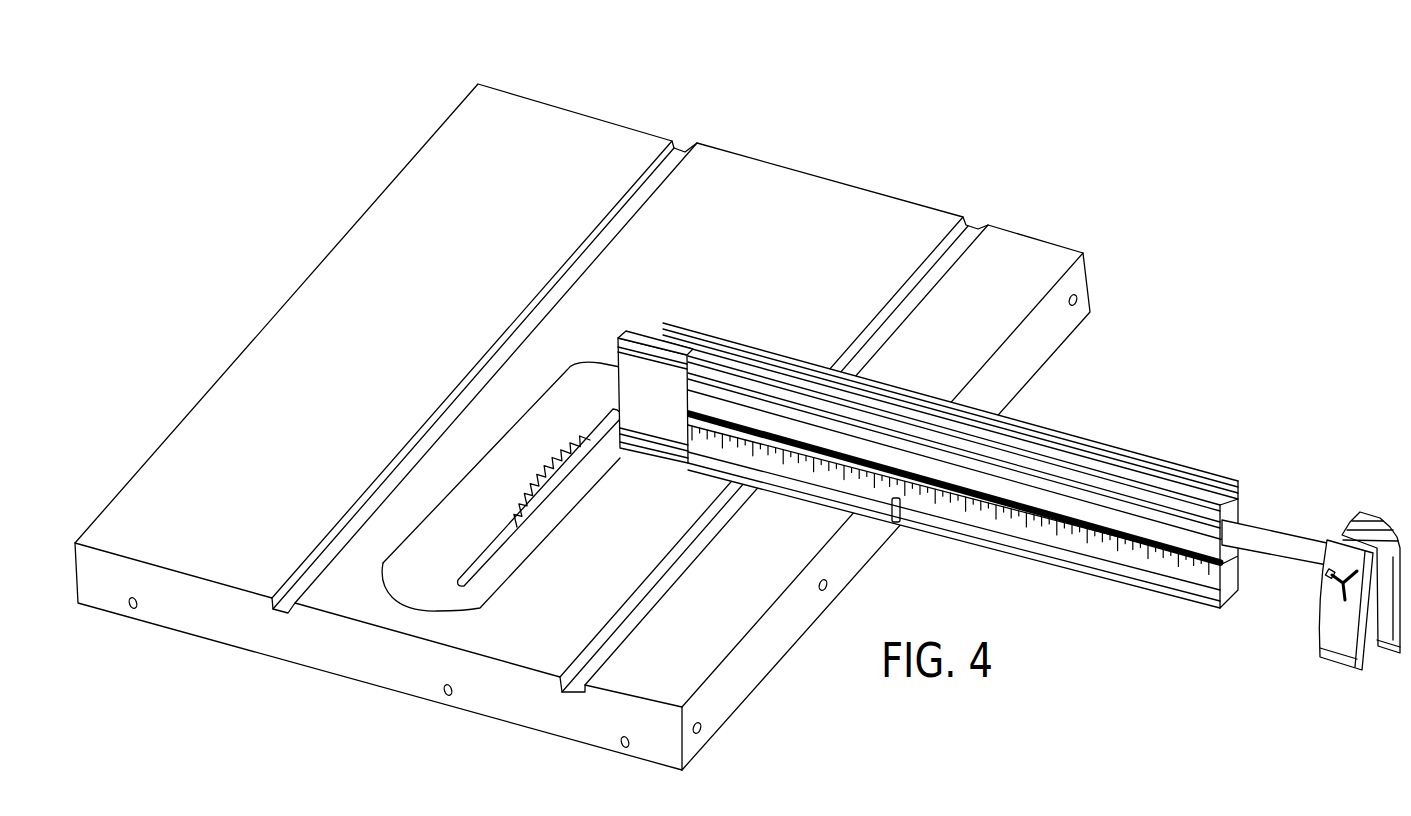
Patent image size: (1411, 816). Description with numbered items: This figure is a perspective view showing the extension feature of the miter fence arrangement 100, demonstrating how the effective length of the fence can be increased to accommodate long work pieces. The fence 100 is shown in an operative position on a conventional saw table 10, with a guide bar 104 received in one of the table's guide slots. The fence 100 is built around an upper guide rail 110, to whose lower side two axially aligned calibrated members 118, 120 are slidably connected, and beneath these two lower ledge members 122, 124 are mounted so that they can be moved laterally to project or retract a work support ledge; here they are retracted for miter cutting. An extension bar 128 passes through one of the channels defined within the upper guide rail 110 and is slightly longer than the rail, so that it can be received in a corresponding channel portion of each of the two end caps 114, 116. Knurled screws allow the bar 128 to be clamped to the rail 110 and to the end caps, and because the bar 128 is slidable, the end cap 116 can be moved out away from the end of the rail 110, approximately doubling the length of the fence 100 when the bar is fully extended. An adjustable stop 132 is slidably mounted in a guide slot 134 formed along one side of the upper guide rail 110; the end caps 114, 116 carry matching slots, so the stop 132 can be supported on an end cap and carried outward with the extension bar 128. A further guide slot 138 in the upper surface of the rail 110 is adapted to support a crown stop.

The saw table 10 is at (665, 690).
The miter fence arrangement 100 is at (1009, 487).
The guide bar 104 is at (633, 612).
The upper guide rail 110 is at (745, 406).
The end cap 114 is at (643, 336).
The end cap 116 is at (1393, 658).
The calibrated member 118 is at (870, 497).
The calibrated member 120 is at (997, 532).
The ledge member 122 is at (773, 483).
The ledge member 124 is at (1102, 577).
The extension bar 128 is at (1275, 530).
The adjustable stop 132 is at (1338, 652).
The guide slot 134 is at (918, 440).
The guide slot 138 is at (1098, 462).